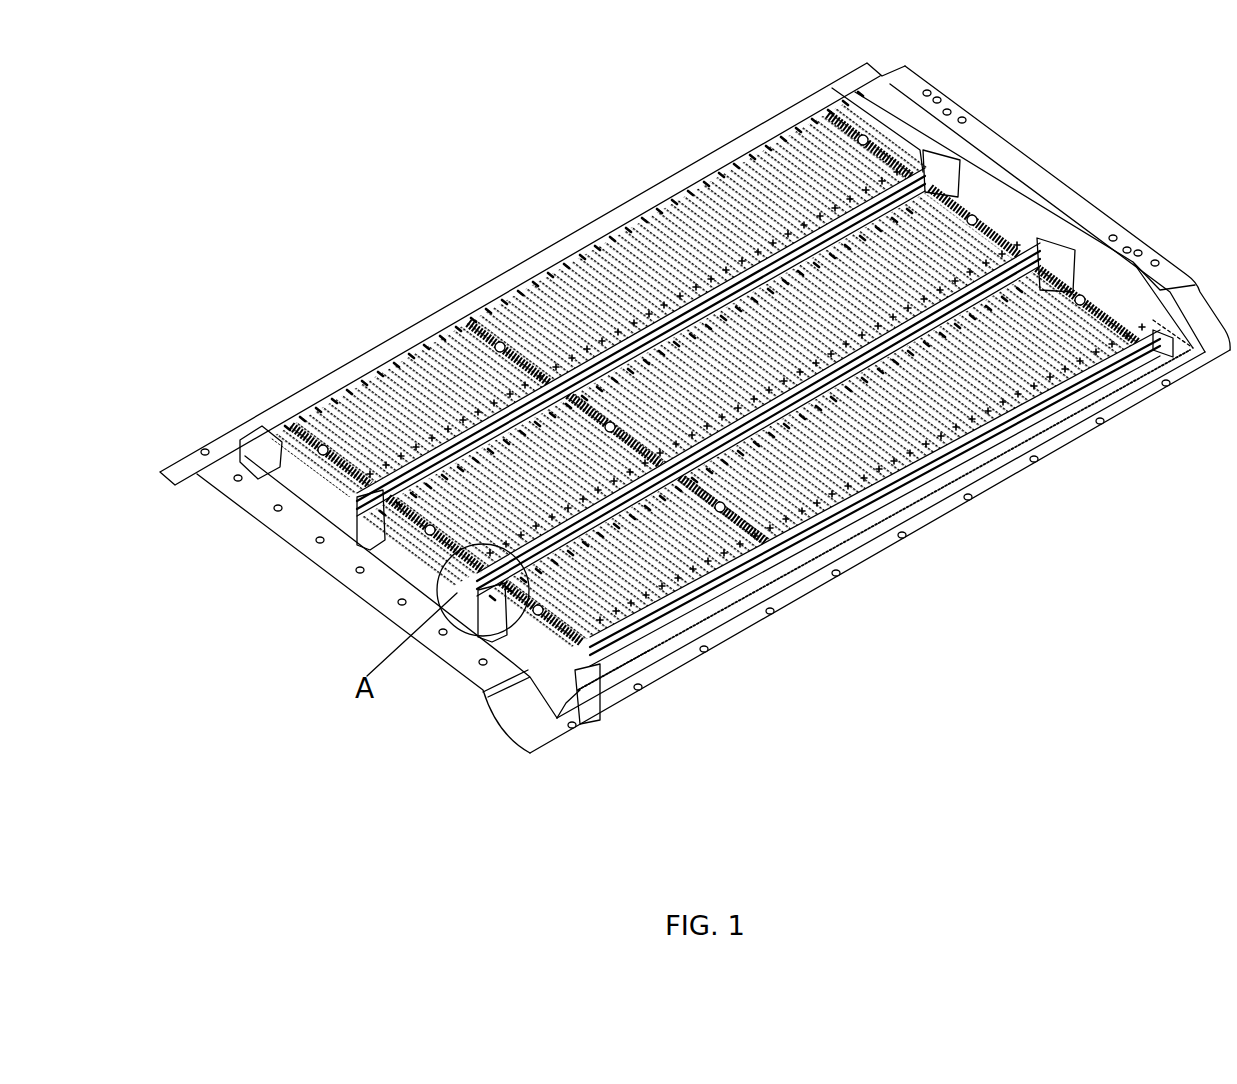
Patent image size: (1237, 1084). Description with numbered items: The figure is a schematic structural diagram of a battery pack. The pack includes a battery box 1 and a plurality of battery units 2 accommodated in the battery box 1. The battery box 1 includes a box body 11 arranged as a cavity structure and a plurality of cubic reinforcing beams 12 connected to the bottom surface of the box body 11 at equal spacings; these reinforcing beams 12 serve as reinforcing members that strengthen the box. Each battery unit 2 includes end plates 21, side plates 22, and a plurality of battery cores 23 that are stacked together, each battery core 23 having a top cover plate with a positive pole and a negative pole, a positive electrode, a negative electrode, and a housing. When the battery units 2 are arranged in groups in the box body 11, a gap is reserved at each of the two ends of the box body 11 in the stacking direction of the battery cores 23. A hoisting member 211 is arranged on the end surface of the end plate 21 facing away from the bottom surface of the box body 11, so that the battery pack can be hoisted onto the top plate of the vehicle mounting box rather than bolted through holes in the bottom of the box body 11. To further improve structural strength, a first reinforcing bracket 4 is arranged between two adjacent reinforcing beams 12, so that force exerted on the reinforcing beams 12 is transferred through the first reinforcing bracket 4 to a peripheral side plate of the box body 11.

The battery box 1 is at (695, 452).
The box body 11 is at (565, 724).
The reinforcing beam 12 is at (590, 687).
The battery unit 2 is at (881, 568).
The end plate 21 is at (618, 677).
The side plate 22 is at (707, 620).
The battery core 23 is at (745, 545).
The hoisting member 211 is at (427, 537).
The first reinforcing bracket 4 is at (1108, 280).